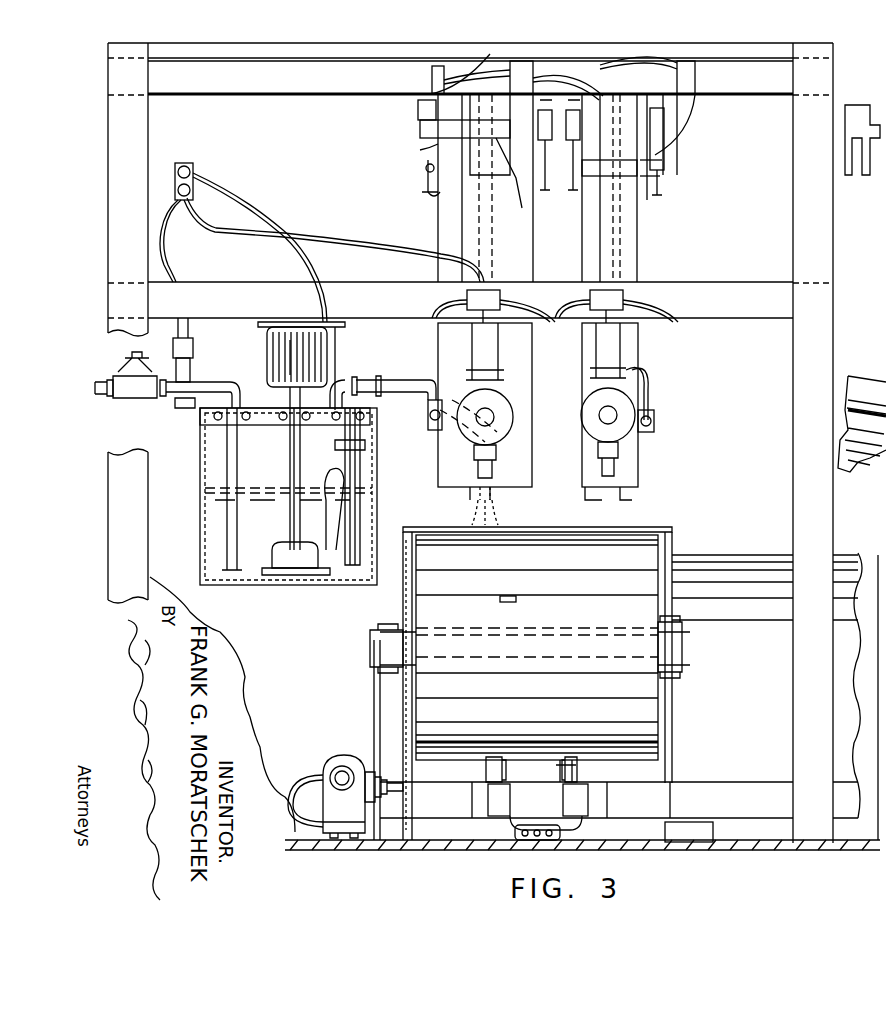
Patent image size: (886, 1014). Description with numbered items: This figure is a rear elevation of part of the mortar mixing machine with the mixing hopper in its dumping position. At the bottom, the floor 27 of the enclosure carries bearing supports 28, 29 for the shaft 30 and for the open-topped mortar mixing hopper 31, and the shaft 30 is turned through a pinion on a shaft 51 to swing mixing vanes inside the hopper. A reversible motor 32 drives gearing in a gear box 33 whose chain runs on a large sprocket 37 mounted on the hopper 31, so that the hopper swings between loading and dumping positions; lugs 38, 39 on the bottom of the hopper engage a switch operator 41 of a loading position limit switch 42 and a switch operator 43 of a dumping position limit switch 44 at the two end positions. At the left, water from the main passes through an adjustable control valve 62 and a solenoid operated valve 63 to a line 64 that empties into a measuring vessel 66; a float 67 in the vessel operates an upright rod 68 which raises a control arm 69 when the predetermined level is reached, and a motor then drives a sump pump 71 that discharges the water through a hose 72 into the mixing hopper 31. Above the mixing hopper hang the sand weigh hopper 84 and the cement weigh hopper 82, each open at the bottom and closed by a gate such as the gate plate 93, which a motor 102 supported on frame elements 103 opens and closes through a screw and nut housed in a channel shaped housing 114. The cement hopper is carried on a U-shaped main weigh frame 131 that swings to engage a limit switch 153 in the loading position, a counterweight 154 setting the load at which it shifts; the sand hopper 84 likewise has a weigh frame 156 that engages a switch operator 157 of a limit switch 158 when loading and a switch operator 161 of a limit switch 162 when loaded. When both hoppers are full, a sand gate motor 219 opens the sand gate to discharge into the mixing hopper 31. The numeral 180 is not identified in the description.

The floor 27 is at (680, 848).
The bearing support 28 is at (373, 716).
The bearing support 29 is at (685, 774).
The shaft 30 is at (580, 650).
The mortar mixing hopper 31 is at (656, 552).
The reversible motor 32 is at (340, 756).
The gear box 33 is at (312, 769).
The large sprocket 37 is at (402, 592).
The lug 38 is at (512, 594).
The lug 39 is at (565, 764).
The switch operator 41 is at (486, 768).
The loading position limit switch 42 is at (478, 793).
The switch operator 43 is at (576, 760).
The dumping position limit switch 44 is at (587, 803).
The shaft 51 is at (98, 388).
The adjustable control valve 62 is at (126, 376).
The solenoid operated valve 63 is at (184, 404).
The line 64 is at (223, 444).
The measuring vessel 66 is at (218, 584).
The float 67 is at (328, 586).
The upright rod 68 is at (332, 363).
The control arm 69 is at (329, 328).
The sump pump 71 is at (280, 581).
The hose 72 is at (390, 383).
The weigh hopper 82 is at (625, 243).
The weigh hopper 84 is at (440, 227).
The gate plate 93 is at (622, 487).
The motor 102 is at (640, 401).
The frame elements 103 is at (625, 368).
The channel shaped housing 114 is at (599, 490).
The main weigh frame 131 is at (664, 122).
The limit switch 153 is at (640, 178).
The counterweight 154 is at (644, 168).
The weigh frame 156 is at (424, 148).
The switch operator 157 is at (424, 168).
The limit switch 158 is at (428, 194).
The switch operator 161 is at (398, 94).
The limit switch 162 is at (446, 92).
The solenoid valve 180 is at (202, 343).
The sand gate motor 219 is at (495, 419).